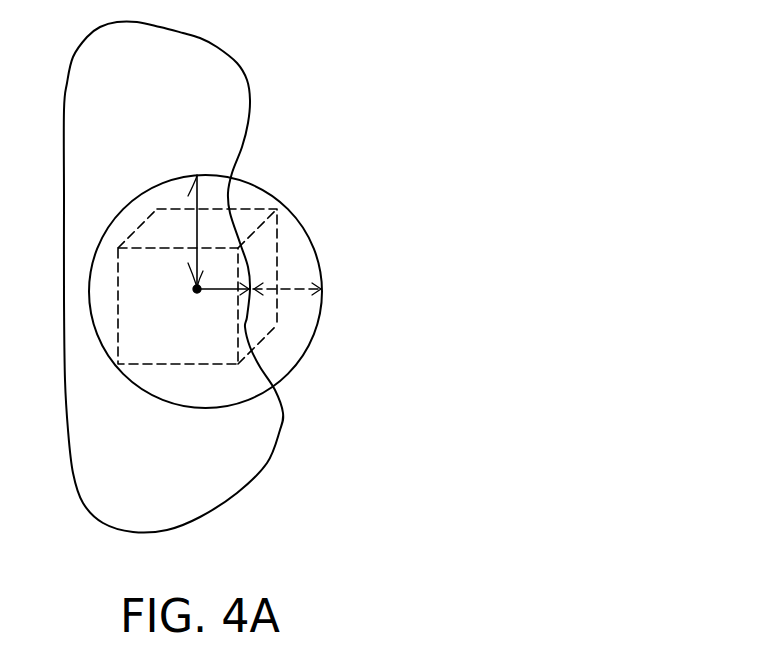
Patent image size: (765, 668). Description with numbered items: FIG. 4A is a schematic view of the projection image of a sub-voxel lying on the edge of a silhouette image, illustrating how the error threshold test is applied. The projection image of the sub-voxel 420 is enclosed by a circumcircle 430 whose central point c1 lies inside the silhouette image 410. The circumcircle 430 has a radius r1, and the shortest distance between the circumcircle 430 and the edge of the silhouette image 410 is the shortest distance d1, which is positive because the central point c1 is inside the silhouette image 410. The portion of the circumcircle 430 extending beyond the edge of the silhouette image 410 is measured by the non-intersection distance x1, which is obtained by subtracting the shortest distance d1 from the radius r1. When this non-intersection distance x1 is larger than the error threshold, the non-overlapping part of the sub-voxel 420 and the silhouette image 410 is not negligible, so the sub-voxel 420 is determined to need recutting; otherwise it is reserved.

The silhouette image 410 is at (221, 44).
The sub-voxel 420 is at (268, 248).
The circumcircle 430 is at (250, 185).
The radius r1 is at (189, 232).
The shortest distance d1 is at (223, 303).
The non-intersection distance x1 is at (287, 303).
The central point c1 is at (189, 292).